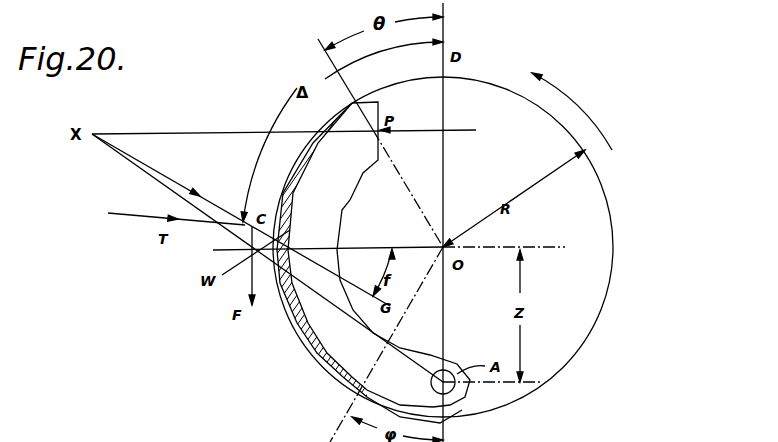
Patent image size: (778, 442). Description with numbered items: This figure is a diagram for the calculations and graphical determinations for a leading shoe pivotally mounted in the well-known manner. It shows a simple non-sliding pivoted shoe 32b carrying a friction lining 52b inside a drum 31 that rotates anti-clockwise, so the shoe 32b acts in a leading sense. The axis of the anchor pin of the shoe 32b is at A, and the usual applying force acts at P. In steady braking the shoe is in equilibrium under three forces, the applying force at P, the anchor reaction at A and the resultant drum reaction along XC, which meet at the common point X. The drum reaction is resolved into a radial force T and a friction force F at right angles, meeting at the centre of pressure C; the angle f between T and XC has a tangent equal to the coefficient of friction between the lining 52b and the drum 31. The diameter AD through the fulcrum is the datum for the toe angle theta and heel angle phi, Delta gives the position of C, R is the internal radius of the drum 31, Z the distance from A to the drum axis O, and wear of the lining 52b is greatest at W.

The drum 31 is at (468, 399).
The pivoted shoe 32b is at (328, 336).
The friction lining 52b is at (285, 308).